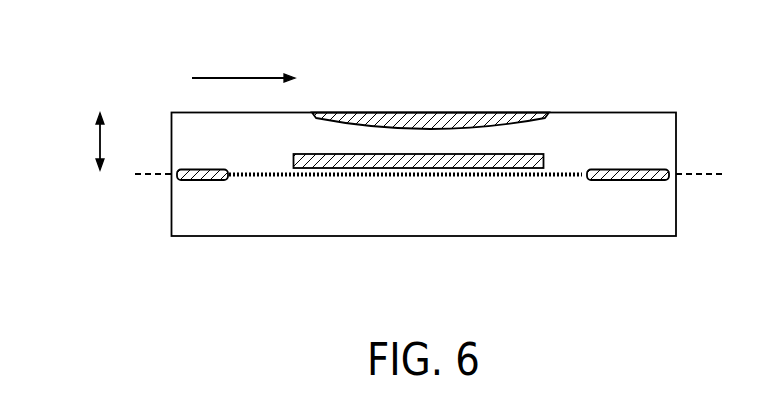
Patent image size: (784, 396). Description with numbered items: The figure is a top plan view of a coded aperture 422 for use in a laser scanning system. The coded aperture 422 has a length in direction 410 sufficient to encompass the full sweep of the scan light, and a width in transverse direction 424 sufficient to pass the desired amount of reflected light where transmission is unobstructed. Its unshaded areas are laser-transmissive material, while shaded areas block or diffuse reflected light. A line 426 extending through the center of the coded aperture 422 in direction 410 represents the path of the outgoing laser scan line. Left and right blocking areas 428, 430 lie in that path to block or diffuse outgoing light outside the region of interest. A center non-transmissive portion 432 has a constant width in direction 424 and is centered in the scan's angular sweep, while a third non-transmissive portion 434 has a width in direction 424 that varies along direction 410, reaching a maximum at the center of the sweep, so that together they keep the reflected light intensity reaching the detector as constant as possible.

The scan direction 410 is at (240, 77).
The coded aperture 422 is at (171, 215).
The transverse direction 424 is at (97, 143).
The line 426 is at (476, 177).
The left blocking area 428 is at (205, 169).
The right blocking area 430 is at (626, 169).
The center non-transmissive portion 432 is at (293, 156).
The third non-transmissive portion 434 is at (345, 118).